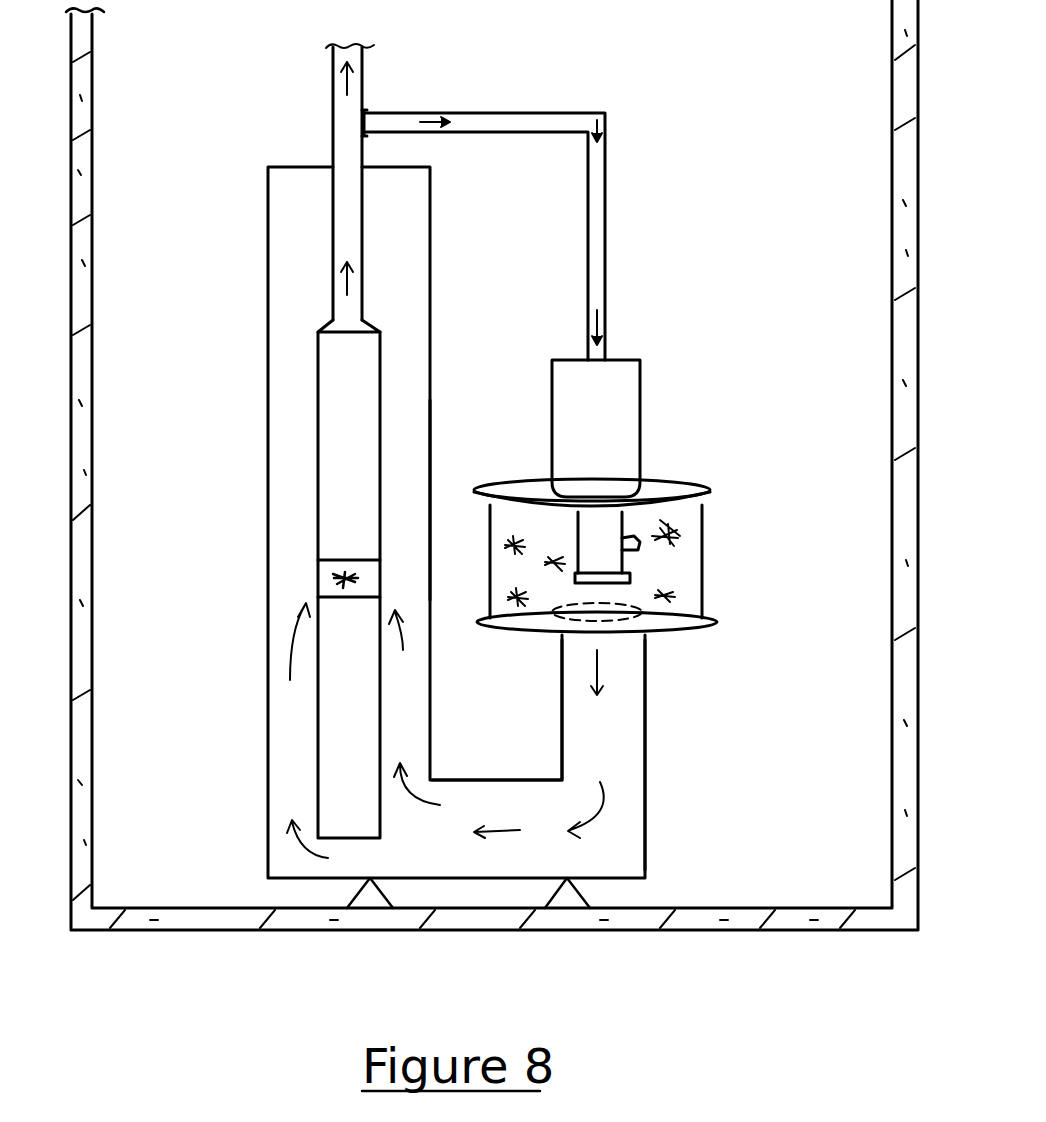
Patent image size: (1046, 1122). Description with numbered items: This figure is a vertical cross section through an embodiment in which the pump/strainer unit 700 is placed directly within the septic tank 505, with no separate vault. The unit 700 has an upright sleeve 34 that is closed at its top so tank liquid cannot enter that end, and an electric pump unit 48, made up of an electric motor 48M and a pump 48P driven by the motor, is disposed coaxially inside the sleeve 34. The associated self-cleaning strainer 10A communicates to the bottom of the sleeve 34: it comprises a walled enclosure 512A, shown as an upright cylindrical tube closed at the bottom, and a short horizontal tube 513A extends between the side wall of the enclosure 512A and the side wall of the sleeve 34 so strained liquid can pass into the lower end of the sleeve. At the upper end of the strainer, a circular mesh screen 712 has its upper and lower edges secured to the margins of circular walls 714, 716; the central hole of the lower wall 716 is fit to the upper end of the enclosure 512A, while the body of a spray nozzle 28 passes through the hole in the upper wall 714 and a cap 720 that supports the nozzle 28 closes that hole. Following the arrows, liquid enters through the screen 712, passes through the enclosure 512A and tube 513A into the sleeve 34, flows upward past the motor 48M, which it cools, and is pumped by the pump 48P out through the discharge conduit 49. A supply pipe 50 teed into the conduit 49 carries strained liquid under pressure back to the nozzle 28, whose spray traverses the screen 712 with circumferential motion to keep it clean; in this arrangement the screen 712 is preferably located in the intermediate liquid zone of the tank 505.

The septic tank 505 is at (892, 116).
The pump/strainer unit 700 is at (255, 326).
The sleeve 34 is at (430, 270).
The discharge conduit 49 is at (362, 85).
The pump 48P is at (349, 579).
The electric motor 48M is at (349, 718).
The supply pipe 50 is at (513, 113).
The cap 720 is at (641, 366).
The self-cleaning strainer 10A is at (690, 452).
The circular wall 714 is at (708, 490).
The mesh screen 712 is at (703, 574).
The spray nozzle 28 is at (640, 550).
The circular wall 716 is at (708, 634).
The walled enclosure 512A is at (645, 681).
The horizontal tube 513A is at (535, 725).
The electric pump unit 48 is at (383, 838).